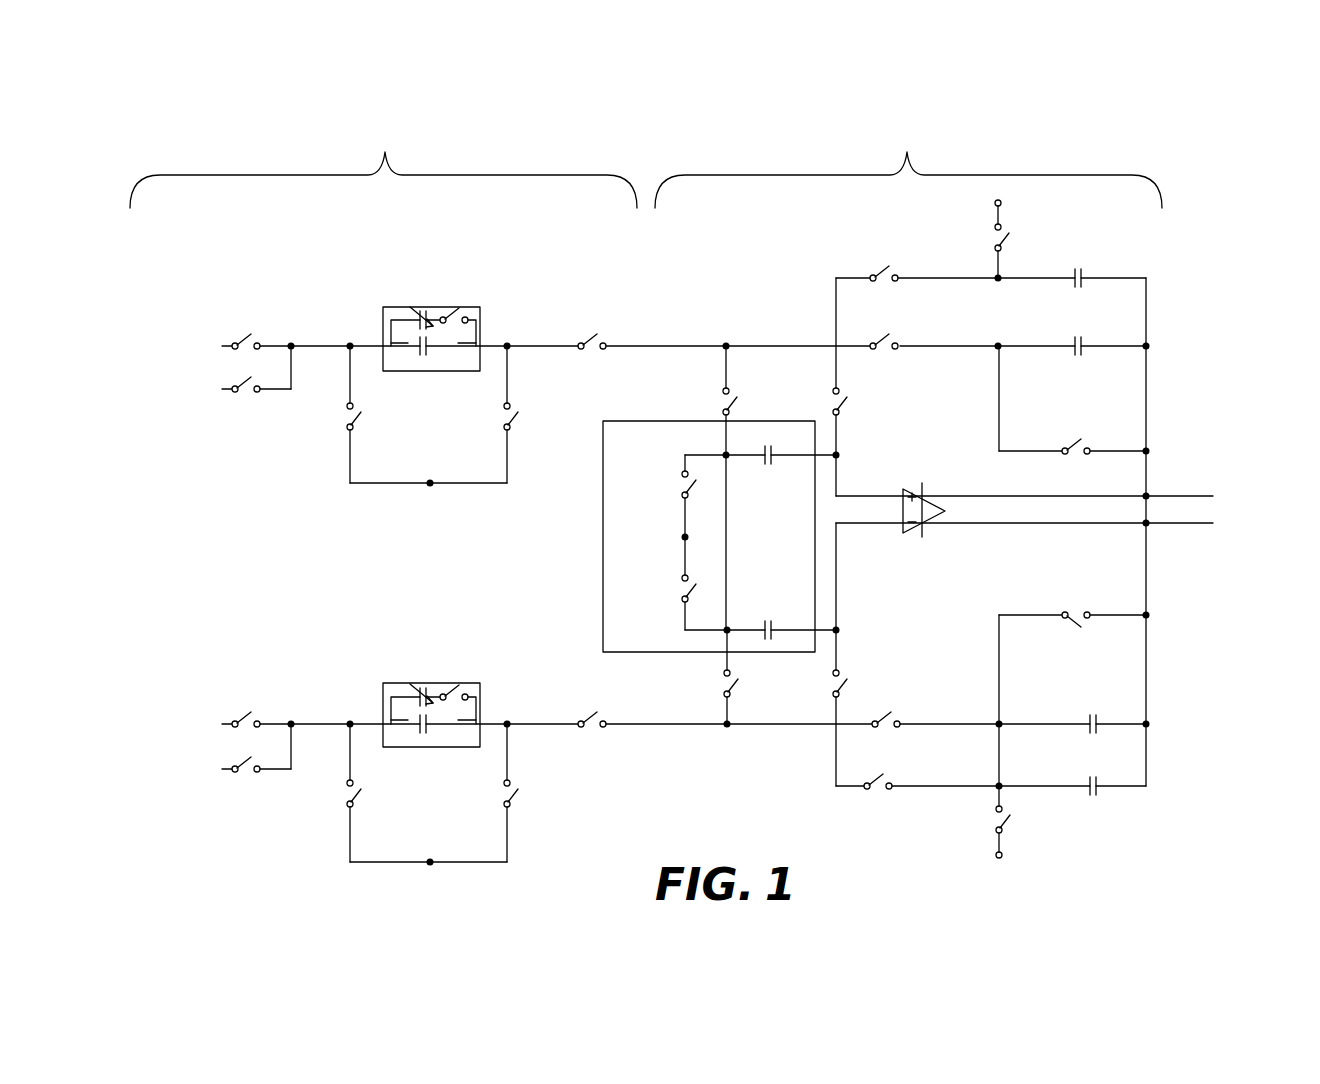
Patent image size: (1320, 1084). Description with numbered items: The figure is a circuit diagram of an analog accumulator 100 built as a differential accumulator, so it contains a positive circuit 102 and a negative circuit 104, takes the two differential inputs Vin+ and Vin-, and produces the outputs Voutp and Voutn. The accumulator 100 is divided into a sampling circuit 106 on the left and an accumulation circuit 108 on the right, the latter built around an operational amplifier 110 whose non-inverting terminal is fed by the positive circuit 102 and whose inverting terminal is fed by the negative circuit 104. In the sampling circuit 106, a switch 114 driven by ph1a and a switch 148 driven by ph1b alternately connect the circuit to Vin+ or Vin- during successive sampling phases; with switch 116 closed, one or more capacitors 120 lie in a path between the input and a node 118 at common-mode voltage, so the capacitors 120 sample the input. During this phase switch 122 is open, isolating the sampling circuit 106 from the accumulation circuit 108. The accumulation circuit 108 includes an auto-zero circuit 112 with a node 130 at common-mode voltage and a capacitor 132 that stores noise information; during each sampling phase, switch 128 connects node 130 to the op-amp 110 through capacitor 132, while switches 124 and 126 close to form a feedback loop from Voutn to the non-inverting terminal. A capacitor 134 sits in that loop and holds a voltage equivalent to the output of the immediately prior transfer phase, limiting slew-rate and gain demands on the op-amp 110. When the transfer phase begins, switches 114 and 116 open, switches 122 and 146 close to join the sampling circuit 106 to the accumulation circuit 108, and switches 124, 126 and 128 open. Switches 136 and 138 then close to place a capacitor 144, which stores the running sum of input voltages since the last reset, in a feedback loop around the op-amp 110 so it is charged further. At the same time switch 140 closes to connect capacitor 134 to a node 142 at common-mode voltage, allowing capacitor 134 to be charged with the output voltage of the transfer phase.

The analog accumulator 100 is at (1197, 190).
The positive circuit 102 is at (241, 292).
The negative circuit 104 is at (243, 656).
The sampling circuit 106 is at (383, 166).
The accumulation circuit 108 is at (908, 166).
The operational amplifier 110 is at (912, 536).
The auto-zero circuit 112 is at (602, 551).
The switch 114 is at (231, 349).
The switch 116 is at (511, 430).
The node at common-mode voltage 118 is at (430, 486).
The capacitors 120 is at (385, 310).
The switch 122 is at (594, 352).
The switch 124 is at (872, 275).
The switch 126 is at (840, 414).
The switch 128 is at (682, 497).
The node at common-mode voltage 130 is at (685, 539).
The capacitor 132 is at (762, 463).
The capacitor 134 is at (1083, 272).
The switch 136 is at (731, 393).
The switch 138 is at (898, 351).
The switch 140 is at (1003, 224).
The node at common-mode voltage 142 is at (995, 204).
The capacitor 144 is at (1083, 352).
The switch 146 is at (347, 430).
The switch 148 is at (232, 393).